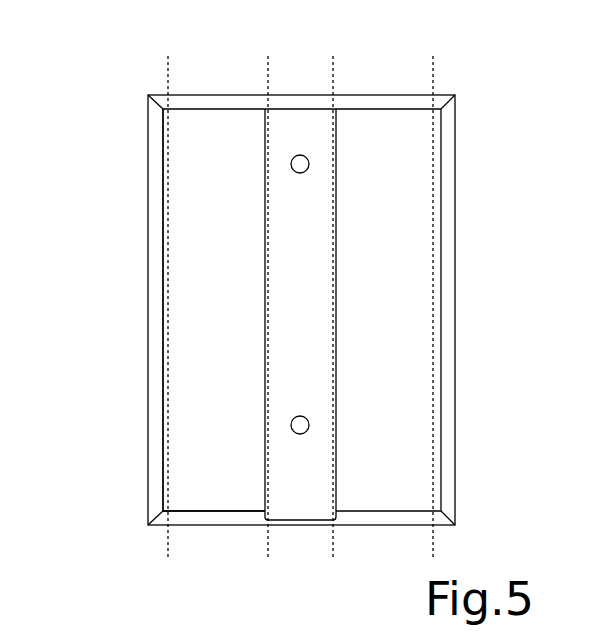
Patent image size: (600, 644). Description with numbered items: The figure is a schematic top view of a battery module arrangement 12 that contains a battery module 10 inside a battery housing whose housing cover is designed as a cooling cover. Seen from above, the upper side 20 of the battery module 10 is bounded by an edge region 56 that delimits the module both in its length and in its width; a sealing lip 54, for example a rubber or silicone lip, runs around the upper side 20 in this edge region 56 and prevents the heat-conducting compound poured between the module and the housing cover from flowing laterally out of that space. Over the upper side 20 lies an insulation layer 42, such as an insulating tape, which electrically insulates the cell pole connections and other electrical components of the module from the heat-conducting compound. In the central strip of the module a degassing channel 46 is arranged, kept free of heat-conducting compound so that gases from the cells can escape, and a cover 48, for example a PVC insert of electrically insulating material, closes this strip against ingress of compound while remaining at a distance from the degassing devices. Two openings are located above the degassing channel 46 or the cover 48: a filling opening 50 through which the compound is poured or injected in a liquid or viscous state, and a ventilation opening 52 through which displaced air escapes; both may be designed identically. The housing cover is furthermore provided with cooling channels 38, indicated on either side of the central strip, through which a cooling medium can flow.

The battery module 10 is at (468, 94).
The battery module arrangement 12 is at (129, 80).
The upper side 20 is at (147, 310).
The insulation layer 42 is at (183, 173).
The cooling channels 38 is at (268, 58).
The degassing channel 46 is at (301, 269).
The cover 48 is at (287, 95).
The filling opening 50 is at (420, 321).
The ventilation opening 52 is at (303, 164).
The sealing lip 54 is at (455, 113).
The edge region 56 is at (441, 153).